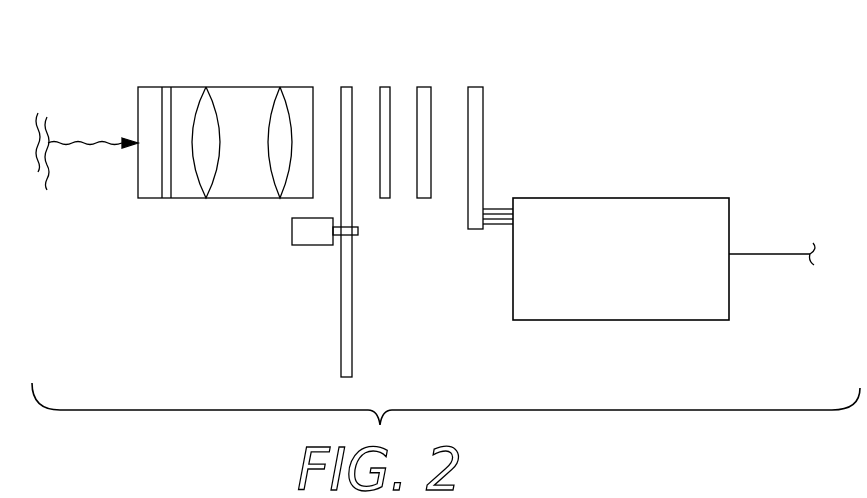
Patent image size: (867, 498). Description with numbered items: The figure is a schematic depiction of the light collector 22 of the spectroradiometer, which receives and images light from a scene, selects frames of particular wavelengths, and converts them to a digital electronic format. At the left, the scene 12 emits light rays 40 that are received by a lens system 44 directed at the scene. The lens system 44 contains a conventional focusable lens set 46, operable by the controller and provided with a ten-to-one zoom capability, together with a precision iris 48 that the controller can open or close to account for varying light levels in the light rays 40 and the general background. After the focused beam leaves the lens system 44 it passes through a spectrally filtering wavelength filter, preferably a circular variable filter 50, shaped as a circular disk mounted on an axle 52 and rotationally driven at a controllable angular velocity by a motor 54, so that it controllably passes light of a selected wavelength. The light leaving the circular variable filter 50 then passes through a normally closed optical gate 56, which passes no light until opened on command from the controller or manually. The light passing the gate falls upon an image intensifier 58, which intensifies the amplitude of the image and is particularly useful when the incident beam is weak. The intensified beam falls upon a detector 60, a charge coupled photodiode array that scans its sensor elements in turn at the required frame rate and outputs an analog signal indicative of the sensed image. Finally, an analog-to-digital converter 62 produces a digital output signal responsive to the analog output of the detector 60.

The sample / light source 12 is at (41, 168).
The light collector 22 is at (446, 322).
The light rays 40 is at (93, 143).
The lens system 44 is at (220, 87).
The focusable lens set 46 is at (278, 175).
The precision iris 48 is at (163, 200).
The circular variable filter 50 is at (350, 87).
The axle 52 is at (358, 231).
The motor 54 is at (303, 245).
The optical gate 56 is at (385, 87).
The image intensifier 58 is at (425, 87).
The detector 60 is at (480, 87).
The analog-to-digital converter 62 is at (693, 320).